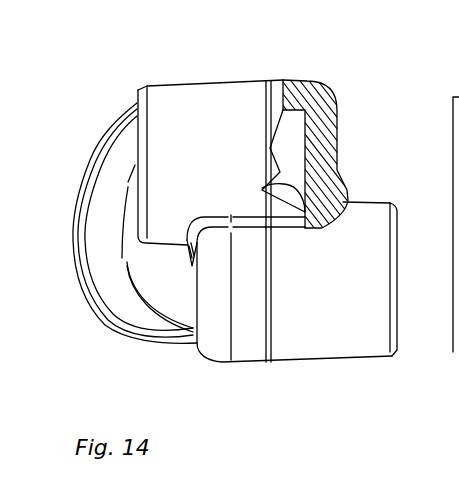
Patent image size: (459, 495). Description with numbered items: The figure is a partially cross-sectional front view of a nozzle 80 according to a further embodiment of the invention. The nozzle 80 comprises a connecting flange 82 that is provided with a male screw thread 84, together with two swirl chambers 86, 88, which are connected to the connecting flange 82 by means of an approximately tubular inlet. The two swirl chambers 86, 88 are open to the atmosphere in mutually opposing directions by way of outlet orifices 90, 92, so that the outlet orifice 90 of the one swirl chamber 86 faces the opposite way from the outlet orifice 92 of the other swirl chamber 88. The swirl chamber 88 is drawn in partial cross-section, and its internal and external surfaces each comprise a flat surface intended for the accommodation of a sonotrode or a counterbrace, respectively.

The nozzle 80 is at (298, 72).
The connecting flange 82 is at (120, 292).
The male screw thread 84 is at (90, 280).
The swirl chamber 86 is at (327, 330).
The swirl chamber 88 is at (192, 103).
The outlet orifice 90 is at (405, 318).
The outlet orifice 92 is at (133, 160).